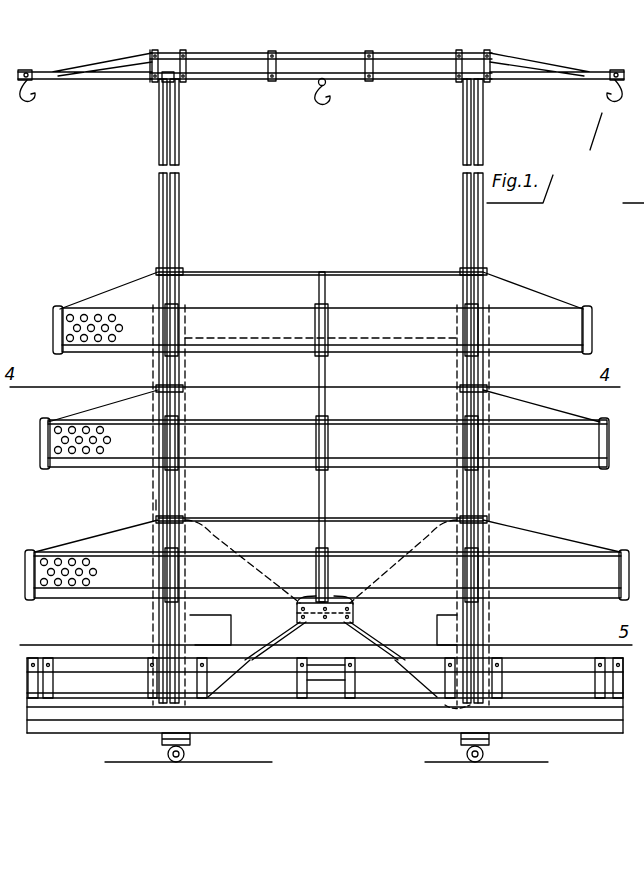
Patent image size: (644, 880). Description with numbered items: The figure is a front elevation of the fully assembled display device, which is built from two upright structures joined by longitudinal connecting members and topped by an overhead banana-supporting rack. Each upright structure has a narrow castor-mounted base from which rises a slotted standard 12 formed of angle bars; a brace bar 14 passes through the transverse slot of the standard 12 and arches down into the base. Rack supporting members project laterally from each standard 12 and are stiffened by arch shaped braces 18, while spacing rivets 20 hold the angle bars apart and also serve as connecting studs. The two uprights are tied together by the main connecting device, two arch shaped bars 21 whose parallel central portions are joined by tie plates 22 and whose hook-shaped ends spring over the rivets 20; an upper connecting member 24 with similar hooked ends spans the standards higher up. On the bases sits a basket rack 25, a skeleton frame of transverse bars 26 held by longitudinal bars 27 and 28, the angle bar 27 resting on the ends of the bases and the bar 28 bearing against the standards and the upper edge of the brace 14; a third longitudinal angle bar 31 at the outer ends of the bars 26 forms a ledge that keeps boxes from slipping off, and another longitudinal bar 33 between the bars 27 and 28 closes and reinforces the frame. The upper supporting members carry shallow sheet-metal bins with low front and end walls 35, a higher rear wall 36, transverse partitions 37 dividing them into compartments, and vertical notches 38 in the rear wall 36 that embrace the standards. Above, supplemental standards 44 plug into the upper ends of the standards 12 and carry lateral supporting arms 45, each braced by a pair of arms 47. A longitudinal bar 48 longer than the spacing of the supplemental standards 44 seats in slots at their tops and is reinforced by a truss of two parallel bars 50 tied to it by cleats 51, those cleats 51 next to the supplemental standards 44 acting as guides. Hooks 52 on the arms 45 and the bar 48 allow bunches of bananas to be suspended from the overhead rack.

The standard 12 is at (185, 505).
The brace bar 14 is at (130, 665).
The arch shaped brace 18 is at (182, 375).
The spacing rivets 20 is at (456, 350).
The arch shaped bars 21 is at (246, 546).
The tie plates 22 is at (312, 620).
The upper connecting member 24 is at (364, 338).
The display rack 25 is at (326, 678).
The transverse bars 26 is at (50, 683).
The longitudinal bar 27 is at (96, 733).
The longitudinal bar 28 is at (102, 665).
The third longitudinal bar 31 is at (322, 720).
The longitudinal bar 33 is at (107, 702).
The edge walls 35 is at (327, 453).
The rear wall 36 is at (327, 412).
The transverse partitions 37 is at (168, 302).
The vertical recess 38 is at (182, 300).
The supplemental standards 44 is at (180, 150).
The supporting arms 45 is at (154, 82).
The brace arms 47 is at (186, 75).
The longitudinal supporting bar 48 is at (120, 79).
The truss bars 50 is at (316, 53).
The cleats 51 is at (183, 52).
The hooks 52 is at (34, 95).